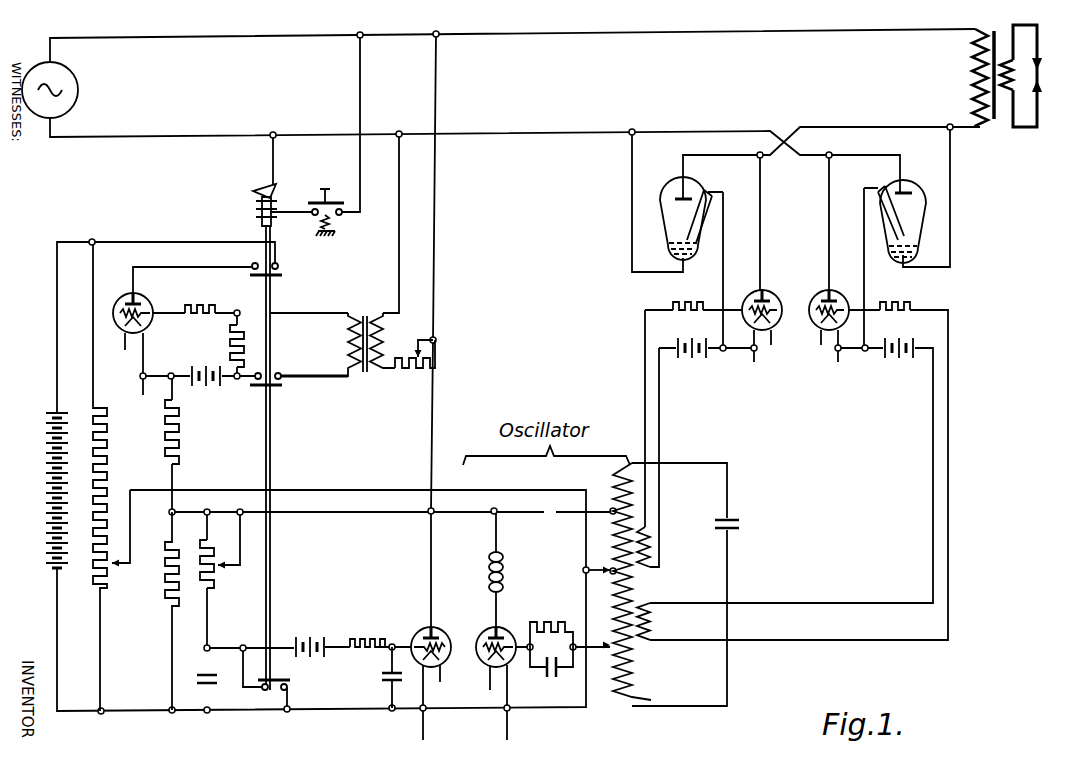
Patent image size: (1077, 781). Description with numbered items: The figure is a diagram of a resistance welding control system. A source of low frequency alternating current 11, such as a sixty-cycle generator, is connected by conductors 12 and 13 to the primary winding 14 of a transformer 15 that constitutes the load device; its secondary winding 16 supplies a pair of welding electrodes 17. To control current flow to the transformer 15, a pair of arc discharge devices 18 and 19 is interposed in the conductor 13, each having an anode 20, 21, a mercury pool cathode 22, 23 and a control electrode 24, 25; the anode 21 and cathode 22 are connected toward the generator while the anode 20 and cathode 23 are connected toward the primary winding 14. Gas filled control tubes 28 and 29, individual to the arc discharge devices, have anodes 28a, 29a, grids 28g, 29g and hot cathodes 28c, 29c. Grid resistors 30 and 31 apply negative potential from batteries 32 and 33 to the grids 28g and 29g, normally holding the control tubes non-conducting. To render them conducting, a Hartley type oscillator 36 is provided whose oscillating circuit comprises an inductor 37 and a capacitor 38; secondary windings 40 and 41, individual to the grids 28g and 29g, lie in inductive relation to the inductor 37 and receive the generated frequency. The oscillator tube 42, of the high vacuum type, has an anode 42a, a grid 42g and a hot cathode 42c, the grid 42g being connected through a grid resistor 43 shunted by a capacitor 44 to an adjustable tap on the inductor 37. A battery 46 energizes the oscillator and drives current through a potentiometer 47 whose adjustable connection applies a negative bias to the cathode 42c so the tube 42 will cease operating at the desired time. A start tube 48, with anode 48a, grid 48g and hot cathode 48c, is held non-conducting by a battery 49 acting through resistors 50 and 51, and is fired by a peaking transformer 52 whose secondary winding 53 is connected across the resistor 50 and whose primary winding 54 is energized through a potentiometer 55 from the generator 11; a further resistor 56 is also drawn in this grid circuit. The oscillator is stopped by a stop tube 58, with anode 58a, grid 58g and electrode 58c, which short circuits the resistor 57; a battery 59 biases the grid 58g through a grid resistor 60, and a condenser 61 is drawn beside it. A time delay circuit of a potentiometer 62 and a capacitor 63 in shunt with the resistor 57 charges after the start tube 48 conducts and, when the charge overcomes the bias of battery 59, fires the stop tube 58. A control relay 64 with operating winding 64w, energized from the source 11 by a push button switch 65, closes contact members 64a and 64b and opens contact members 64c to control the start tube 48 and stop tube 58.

The source of low frequency alternating current 11 is at (105, 84).
The conductor 12 is at (749, 31).
The conductor 13 is at (722, 130).
The primary winding 14 is at (971, 76).
The transformer 15 is at (1000, 67).
The secondary winding 16 is at (1010, 72).
The welding electrodes 17 is at (1040, 85).
The arc discharge device 18 is at (691, 226).
The arc discharge device 19 is at (913, 208).
The anode 20 is at (695, 196).
The anode 21 is at (913, 192).
The mercury pool cathode 22 is at (692, 260).
The mercury pool cathode 23 is at (915, 252).
The control electrode 24 is at (700, 238).
The control electrode 25 is at (907, 220).
The control tube 28 is at (776, 306).
The anode 28a is at (770, 301).
The control electrode or grid 28g is at (779, 312).
The hot cathode 28c is at (775, 328).
The control tube 29 is at (839, 305).
The anode 29a is at (836, 301).
The control electrode or grid 29g is at (845, 312).
The hot cathode 29c is at (841, 329).
The grid resistor 30 is at (685, 303).
The grid resistor 31 is at (900, 302).
The battery 32 is at (690, 361).
The battery 33 is at (897, 361).
The oscillator 36 is at (550, 595).
The inductor 37 is at (635, 585).
The capacitor 38 is at (735, 533).
The secondary winding 40 is at (652, 548).
The secondary winding 41 is at (653, 621).
The oscillator tube 42 is at (502, 644).
The anode 42a is at (503, 634).
The control electrode or grid 42g is at (509, 644).
The hot cathode 42c is at (505, 663).
The grid resistor 43 is at (556, 622).
The capacitor 44 is at (554, 677).
The battery 46 is at (30, 498).
The potentiometer 47 is at (107, 474).
The start tube 48 is at (154, 309).
The anode 48a is at (141, 304).
The control electrode or grid 48g is at (148, 312).
The hot cathode 48c is at (146, 327).
The battery 49 is at (200, 380).
The resistor 50 is at (230, 349).
The resistor 51 is at (212, 306).
The peaking transformer 52 is at (358, 344).
The secondary winding 53 is at (348, 348).
The primary winding 54 is at (384, 338).
The potentiometer 55 is at (405, 370).
The resistor 56 is at (180, 450).
The resistor 57 is at (165, 583).
The stop tube 58 is at (435, 639).
The anode 58a is at (437, 634).
The control electrode or grid 58g is at (447, 644).
The anode 58c is at (441, 664).
The battery 59 is at (326, 636).
The grid resistor 60 is at (355, 640).
The condenser 61 is at (394, 681).
The potentiometer 62 is at (215, 580).
The capacitor 63 is at (212, 677).
The control relay 64 is at (264, 430).
The operating winding 64w is at (272, 189).
The contact members 64a is at (279, 274).
The contact members 64b is at (279, 372).
The contact members 64c is at (264, 690).
The push button switch 65 is at (370, 239).